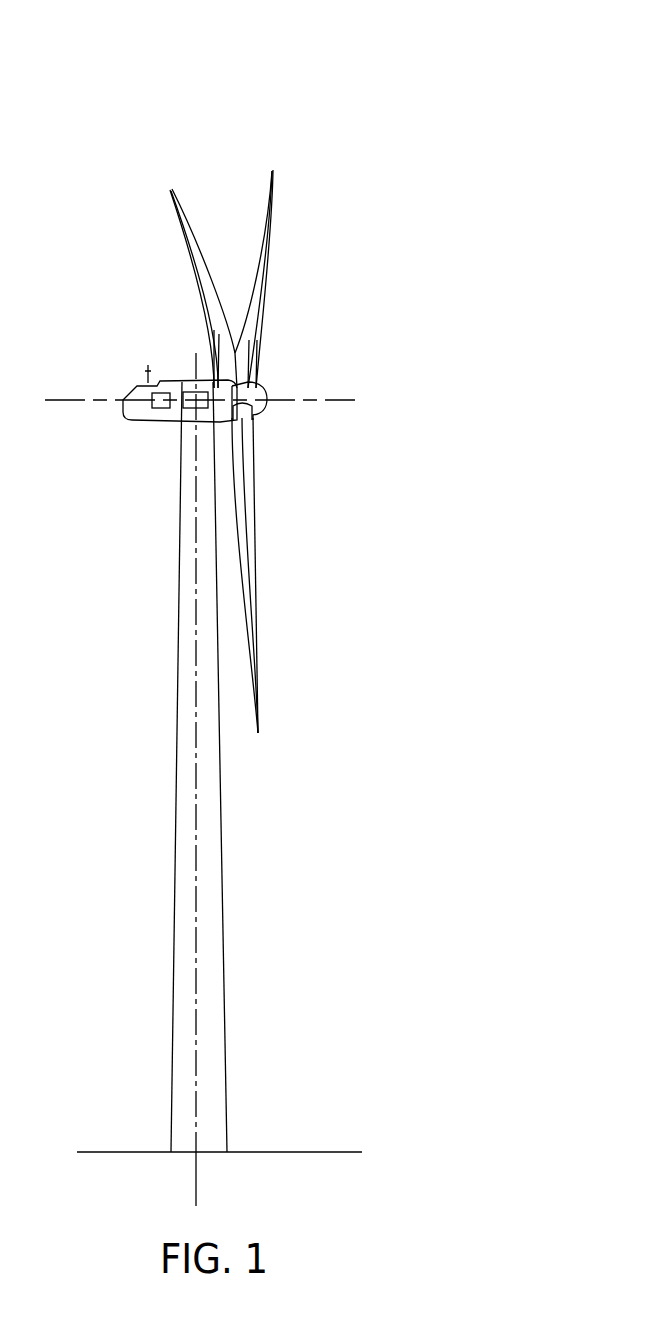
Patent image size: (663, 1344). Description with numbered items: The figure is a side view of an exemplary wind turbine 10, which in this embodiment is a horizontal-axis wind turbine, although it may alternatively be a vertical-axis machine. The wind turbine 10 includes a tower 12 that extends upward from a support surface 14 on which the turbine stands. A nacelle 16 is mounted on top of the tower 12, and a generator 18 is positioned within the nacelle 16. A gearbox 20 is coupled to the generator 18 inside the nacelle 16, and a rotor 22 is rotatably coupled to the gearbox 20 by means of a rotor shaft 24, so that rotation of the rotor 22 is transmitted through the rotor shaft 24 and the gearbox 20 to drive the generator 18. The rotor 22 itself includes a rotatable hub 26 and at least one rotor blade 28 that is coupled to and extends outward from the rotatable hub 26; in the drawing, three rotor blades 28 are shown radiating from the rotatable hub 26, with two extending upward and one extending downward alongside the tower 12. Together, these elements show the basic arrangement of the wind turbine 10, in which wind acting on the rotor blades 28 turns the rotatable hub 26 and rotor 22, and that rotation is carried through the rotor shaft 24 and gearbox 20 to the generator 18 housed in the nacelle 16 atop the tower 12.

The wind turbine 10 is at (436, 64).
The tower 12 is at (174, 897).
The support surface 14 is at (122, 1152).
The nacelle 16 is at (140, 420).
The generator 18 is at (150, 395).
The gearbox 20 is at (187, 393).
The rotor 22 is at (276, 375).
The rotor shaft 24 is at (210, 360).
The rotatable hub 26 is at (267, 405).
The rotor blade 28 is at (190, 242).